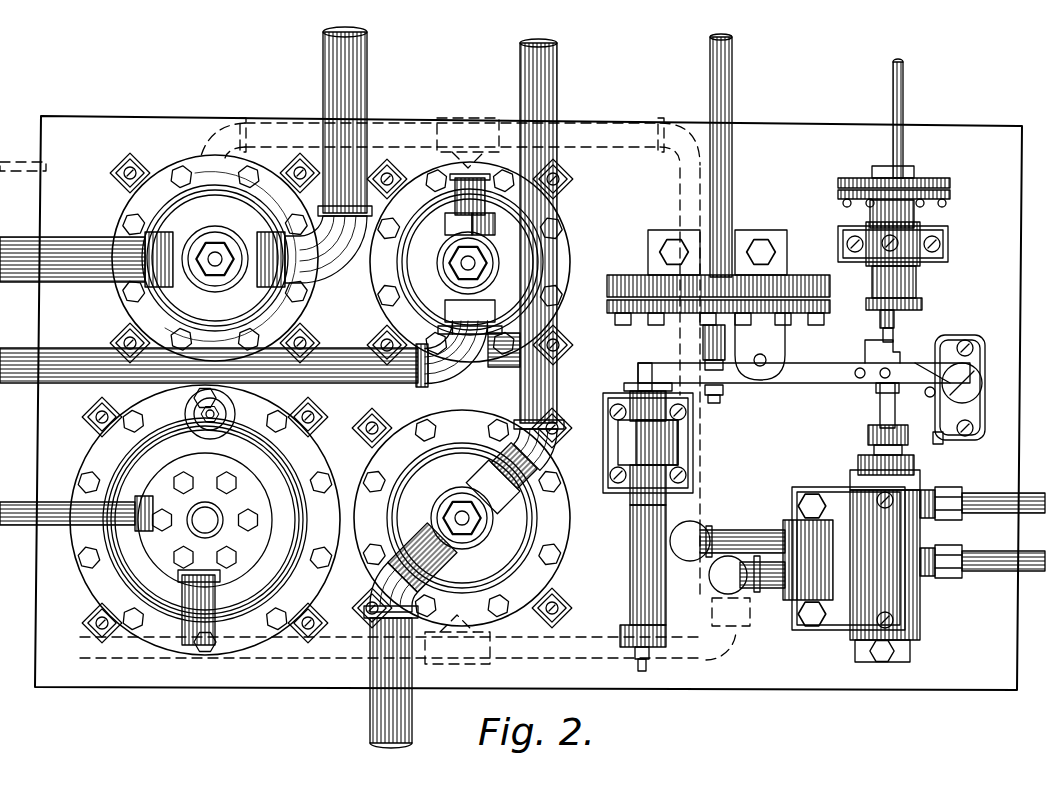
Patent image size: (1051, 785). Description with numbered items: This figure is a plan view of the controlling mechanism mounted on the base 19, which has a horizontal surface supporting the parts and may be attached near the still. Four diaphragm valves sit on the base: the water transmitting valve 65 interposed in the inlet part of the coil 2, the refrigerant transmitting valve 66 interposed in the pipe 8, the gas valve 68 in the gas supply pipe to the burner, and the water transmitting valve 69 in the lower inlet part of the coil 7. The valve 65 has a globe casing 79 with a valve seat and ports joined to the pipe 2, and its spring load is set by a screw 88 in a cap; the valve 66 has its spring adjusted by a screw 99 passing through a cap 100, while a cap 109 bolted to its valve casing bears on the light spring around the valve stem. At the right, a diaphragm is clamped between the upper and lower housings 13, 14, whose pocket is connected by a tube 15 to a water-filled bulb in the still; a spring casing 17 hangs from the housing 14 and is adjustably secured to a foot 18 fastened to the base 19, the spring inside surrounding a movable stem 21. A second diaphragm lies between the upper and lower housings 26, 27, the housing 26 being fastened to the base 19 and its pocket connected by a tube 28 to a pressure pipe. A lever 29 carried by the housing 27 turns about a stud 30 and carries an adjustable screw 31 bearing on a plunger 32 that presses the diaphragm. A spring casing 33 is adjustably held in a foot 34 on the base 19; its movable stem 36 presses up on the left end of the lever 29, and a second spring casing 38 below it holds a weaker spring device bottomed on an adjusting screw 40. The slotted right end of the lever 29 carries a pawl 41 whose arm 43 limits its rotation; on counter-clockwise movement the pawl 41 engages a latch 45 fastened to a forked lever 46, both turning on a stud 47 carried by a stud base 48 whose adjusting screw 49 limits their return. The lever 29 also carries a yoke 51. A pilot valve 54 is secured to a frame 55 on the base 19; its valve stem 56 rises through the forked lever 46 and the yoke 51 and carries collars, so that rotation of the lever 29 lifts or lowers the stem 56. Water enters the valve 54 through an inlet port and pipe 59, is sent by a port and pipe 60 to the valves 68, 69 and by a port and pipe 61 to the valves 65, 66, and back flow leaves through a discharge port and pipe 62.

The coil 2 is at (375, 705).
The coil 7 is at (72, 372).
The pipe 8 is at (27, 522).
The upper housing 13 is at (952, 183).
The lower housing 14 is at (950, 200).
The tube 15 is at (904, 96).
The spring casing 17 is at (912, 218).
The foot 18 is at (850, 232).
The base 19 is at (145, 128).
The movable stem 21 is at (900, 318).
The upper housing 26 is at (831, 287).
The lower housing 27 is at (826, 305).
The tube 28 is at (723, 188).
The lever 29 is at (825, 385).
The stud 30 is at (761, 366).
The adjustable screw 31 is at (716, 403).
The plunger 32 is at (705, 340).
The spring casing 33 is at (630, 502).
The foot 34 is at (690, 462).
The movable stem 36 is at (640, 393).
The spring casing 38 is at (630, 575).
The adjusting screw 40 is at (640, 660).
The pawl 41 is at (926, 362).
The arm 43 is at (880, 396).
The latch 45 is at (950, 348).
The forked lever 46 is at (906, 408).
The stud 47 is at (980, 378).
The stud base 48 is at (975, 406).
The adjusting screw 49 is at (938, 440).
The yoke 51 is at (868, 352).
The pilot valve 54 is at (925, 596).
The frame 55 is at (840, 490).
The valve stem 56 is at (878, 410).
The inlet port and pipe 59 is at (988, 575).
The port and pipe 60 is at (740, 536).
The port and pipe 61 is at (748, 582).
The discharge port and pipe 62 is at (990, 500).
The water transmitting valve 65 is at (570, 540).
The refrigerant transmitting valve 66 is at (90, 577).
The gas valve 68 is at (135, 311).
The water transmitting valve 69 is at (588, 256).
The globe casing 79 is at (440, 515).
The screw 88 is at (458, 510).
The screw 99 is at (204, 420).
The cap 100 is at (222, 420).
The cap 109 is at (185, 555).